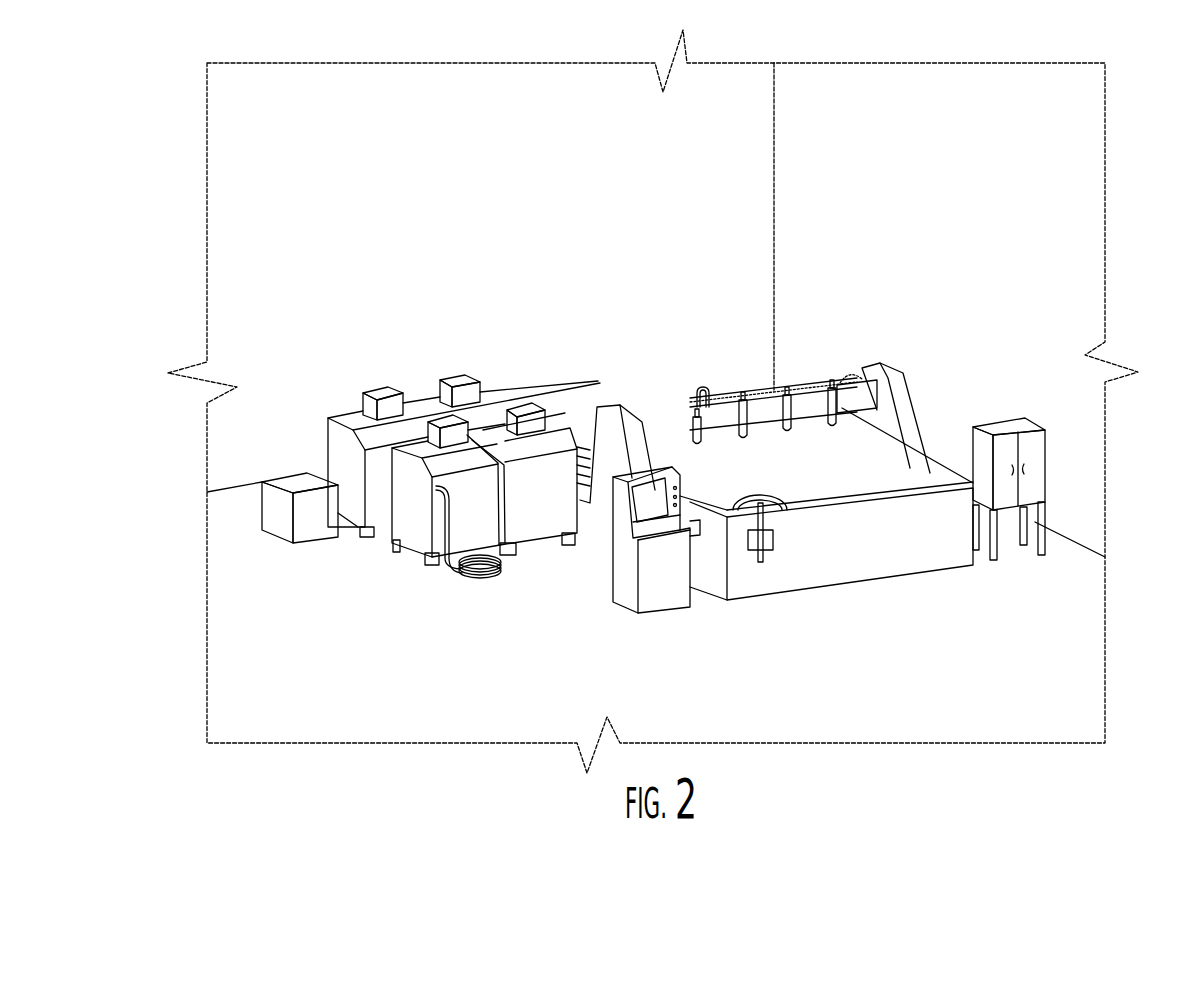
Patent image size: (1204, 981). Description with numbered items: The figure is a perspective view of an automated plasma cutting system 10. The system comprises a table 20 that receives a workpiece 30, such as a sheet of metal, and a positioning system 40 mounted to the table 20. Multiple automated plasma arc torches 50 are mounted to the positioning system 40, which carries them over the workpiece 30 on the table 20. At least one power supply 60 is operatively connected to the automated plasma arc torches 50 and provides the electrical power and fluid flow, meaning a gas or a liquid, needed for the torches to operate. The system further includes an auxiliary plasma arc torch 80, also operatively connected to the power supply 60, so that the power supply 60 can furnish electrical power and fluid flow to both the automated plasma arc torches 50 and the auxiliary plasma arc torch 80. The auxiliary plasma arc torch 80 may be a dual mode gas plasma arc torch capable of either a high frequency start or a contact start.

The automated plasma cutting system 10 is at (962, 272).
The table 20 is at (943, 533).
The workpiece 30 is at (923, 472).
The positioning system 40 is at (868, 397).
The automated plasma arc torch 50 is at (701, 432).
The power supply 60 is at (480, 432).
The auxiliary plasma arc torch 80 is at (457, 575).